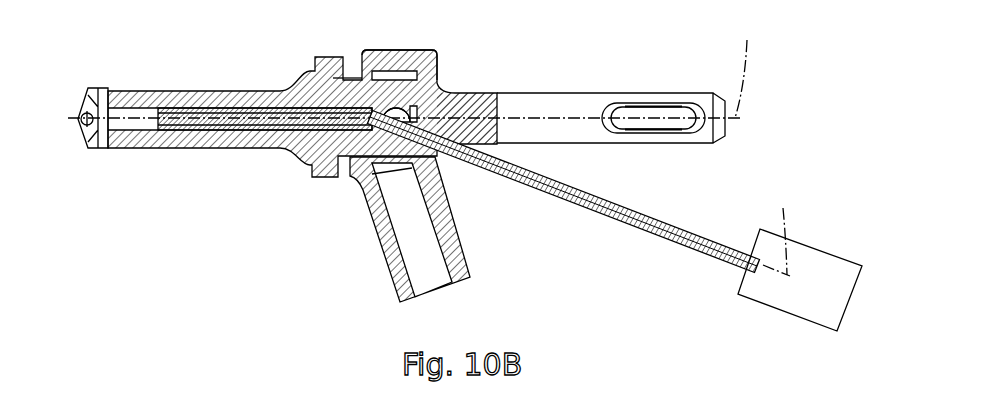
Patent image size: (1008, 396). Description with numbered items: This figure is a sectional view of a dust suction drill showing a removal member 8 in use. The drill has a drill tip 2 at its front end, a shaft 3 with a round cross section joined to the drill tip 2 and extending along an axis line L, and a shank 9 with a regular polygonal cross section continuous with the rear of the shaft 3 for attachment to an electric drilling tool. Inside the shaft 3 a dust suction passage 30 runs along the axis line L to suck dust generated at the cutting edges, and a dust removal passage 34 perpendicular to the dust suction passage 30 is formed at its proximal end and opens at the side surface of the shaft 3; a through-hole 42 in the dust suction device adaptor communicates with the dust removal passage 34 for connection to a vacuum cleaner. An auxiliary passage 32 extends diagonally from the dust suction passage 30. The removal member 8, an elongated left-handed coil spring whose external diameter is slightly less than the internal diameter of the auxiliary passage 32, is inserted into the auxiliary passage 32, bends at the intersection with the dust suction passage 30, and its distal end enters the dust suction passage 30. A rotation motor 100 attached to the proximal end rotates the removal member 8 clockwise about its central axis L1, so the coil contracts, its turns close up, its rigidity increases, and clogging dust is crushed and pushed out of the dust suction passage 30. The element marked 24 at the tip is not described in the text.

The drill tip 2 is at (98, 90).
The dust suction passage 30 is at (122, 112).
The shaft 3 is at (224, 92).
The nozzle opening 24 is at (85, 138).
The dust removal passage 34 is at (393, 112).
The shank 9 is at (533, 104).
The auxiliary passage 32 is at (455, 145).
The removal member 8 is at (718, 240).
The rotation motor 100 is at (820, 263).
The through-hole 42 is at (412, 278).
The axis line L is at (410, 65).
The central axis L1 is at (786, 230).